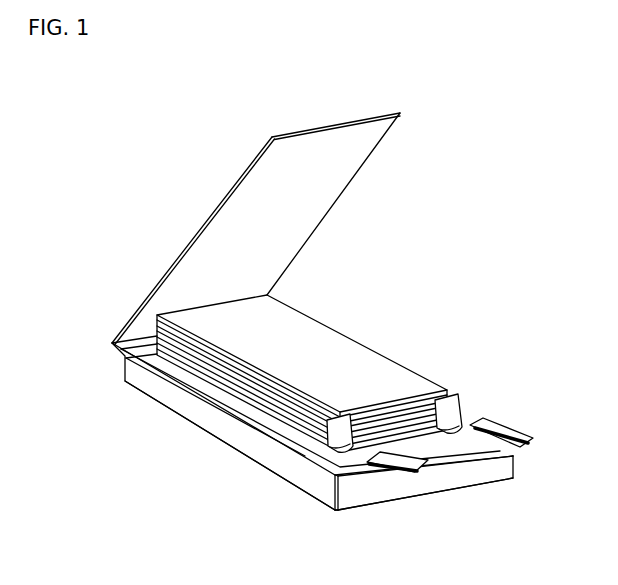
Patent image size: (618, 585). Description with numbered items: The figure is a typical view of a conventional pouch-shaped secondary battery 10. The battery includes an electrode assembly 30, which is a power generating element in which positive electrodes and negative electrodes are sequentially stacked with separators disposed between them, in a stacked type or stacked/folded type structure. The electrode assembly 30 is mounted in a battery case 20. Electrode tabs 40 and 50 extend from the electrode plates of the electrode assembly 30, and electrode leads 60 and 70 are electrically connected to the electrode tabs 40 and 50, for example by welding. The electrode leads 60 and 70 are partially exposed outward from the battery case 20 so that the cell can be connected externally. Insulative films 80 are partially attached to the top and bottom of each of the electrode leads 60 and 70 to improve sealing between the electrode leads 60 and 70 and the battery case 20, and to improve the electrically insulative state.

The pouch-shaped secondary battery 10 is at (93, 176).
The battery case 20 is at (272, 410).
The electrode assembly 30 is at (365, 312).
The electrode tab 40 is at (283, 462).
The electrode tab 50 is at (342, 373).
The electrode lead 60 is at (326, 473).
The electrode lead 70 is at (467, 437).
The insulative film 80 is at (425, 504).